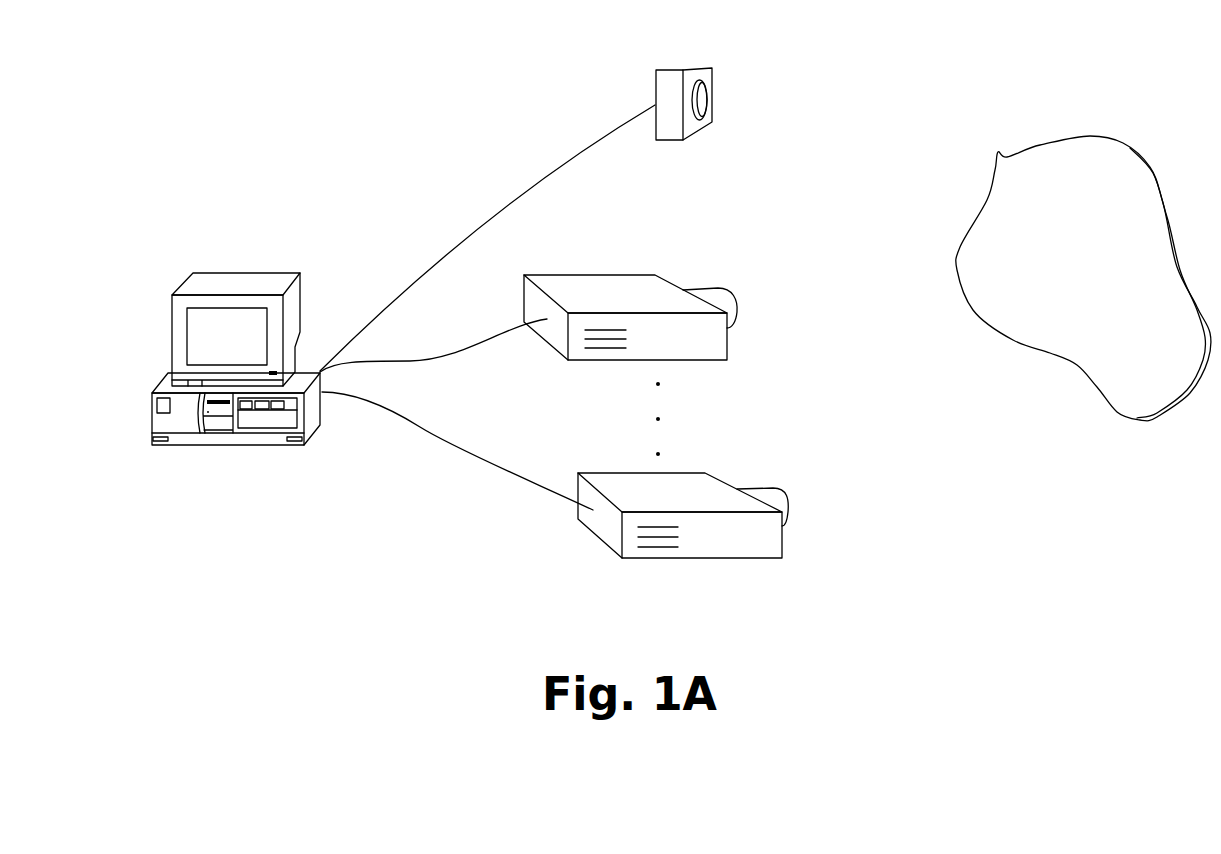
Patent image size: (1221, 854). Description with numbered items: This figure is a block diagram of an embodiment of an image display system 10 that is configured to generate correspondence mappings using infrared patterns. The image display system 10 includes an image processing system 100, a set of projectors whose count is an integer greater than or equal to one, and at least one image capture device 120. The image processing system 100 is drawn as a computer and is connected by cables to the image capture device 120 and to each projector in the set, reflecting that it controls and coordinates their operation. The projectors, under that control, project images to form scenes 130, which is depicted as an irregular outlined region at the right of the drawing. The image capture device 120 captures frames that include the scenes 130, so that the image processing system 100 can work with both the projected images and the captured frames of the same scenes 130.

The image display system 10 is at (372, 609).
The image processing system 100 is at (316, 428).
The image capture device 120 is at (672, 140).
The scene 130 is at (986, 129).